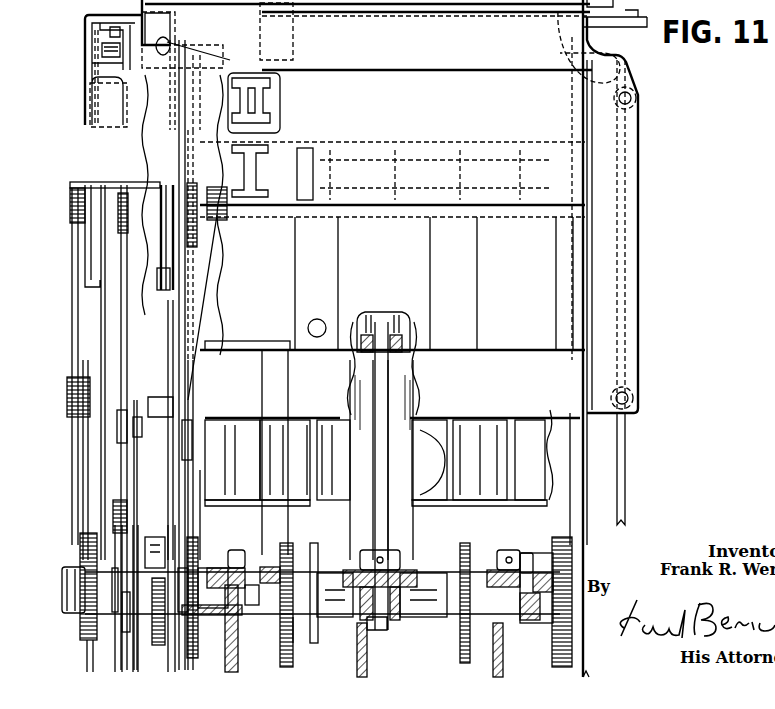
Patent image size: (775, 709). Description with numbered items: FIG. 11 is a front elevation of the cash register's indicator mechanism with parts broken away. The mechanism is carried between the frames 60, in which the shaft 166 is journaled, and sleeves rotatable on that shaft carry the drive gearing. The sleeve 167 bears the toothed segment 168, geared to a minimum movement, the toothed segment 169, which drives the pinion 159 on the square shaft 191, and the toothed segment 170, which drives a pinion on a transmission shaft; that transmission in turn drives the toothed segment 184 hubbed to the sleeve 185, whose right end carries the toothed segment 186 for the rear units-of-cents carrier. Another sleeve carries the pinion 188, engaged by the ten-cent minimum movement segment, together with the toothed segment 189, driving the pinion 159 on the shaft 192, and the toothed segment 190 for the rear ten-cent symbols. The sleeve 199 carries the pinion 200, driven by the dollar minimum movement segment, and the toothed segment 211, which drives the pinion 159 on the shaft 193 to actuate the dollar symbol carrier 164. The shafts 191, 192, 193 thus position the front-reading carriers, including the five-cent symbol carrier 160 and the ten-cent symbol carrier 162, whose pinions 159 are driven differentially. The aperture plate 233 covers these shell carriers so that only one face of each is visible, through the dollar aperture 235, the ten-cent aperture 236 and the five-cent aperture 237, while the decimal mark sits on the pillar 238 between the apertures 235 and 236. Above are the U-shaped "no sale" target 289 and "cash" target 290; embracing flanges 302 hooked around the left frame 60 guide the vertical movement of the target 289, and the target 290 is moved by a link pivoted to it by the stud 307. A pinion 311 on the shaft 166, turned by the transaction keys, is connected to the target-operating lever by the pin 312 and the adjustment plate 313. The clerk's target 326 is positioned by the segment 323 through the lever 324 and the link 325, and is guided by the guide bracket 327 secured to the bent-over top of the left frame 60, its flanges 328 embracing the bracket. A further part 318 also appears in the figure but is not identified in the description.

The indicator frames 60 is at (92, 15).
The bracket 318 is at (84, 34).
The guide bracket 327 is at (90, 76).
The "no sale" target 289 is at (378, 60).
The clerk's target 326 is at (275, 96).
The "cash" target 290 is at (413, 150).
The embracing flanges 302 is at (180, 148).
The stud 307 is at (112, 205).
The flanges 328 is at (95, 270).
The link 325 is at (72, 345).
The aperture 235 is at (257, 342).
The pillar 238 is at (296, 330).
The aperture 236 is at (352, 355).
The aperture 237 is at (492, 342).
The symbol carrier 164 is at (293, 427).
The lever 324 is at (83, 447).
The aperture plate 233 is at (545, 410).
The segment 323 is at (97, 538).
The pinion 311 is at (189, 540).
The square shaft 193 is at (260, 513).
The symbol carrier 162 is at (327, 497).
The pinions 159 is at (230, 552).
The square shaft 192 is at (388, 516).
The symbol carrier 160 is at (502, 494).
The square shaft 191 is at (520, 540).
The pin 312 is at (103, 595).
The toothed segment 168 is at (584, 548).
The shaft 166 is at (60, 587).
The sleeve 185 is at (440, 575).
The sleeve 199 is at (598, 22).
The pinion 188 is at (316, 620).
The toothed segment 189 is at (383, 628).
The toothed segment 169 is at (508, 624).
The sleeve 167 is at (536, 610).
The toothed segment 184 is at (190, 635).
The toothed segment 211 is at (257, 622).
The toothed segment 186 is at (240, 660).
The pinion 200 is at (293, 643).
The toothed segment 190 is at (367, 657).
The adjustment plate 313 is at (117, 637).
The toothed segment 170 is at (586, 660).